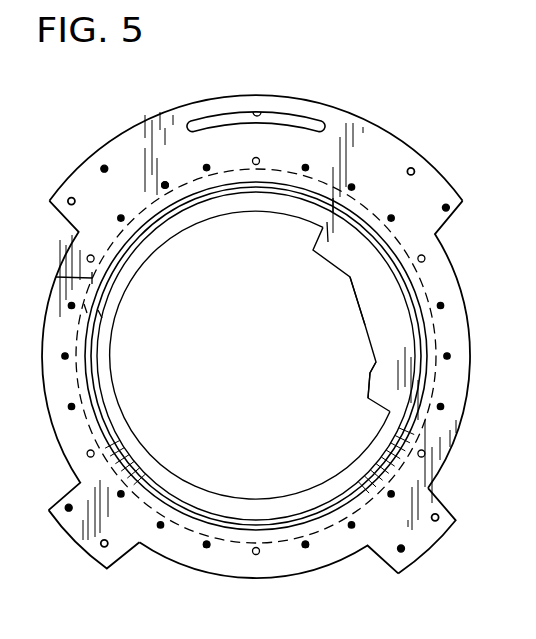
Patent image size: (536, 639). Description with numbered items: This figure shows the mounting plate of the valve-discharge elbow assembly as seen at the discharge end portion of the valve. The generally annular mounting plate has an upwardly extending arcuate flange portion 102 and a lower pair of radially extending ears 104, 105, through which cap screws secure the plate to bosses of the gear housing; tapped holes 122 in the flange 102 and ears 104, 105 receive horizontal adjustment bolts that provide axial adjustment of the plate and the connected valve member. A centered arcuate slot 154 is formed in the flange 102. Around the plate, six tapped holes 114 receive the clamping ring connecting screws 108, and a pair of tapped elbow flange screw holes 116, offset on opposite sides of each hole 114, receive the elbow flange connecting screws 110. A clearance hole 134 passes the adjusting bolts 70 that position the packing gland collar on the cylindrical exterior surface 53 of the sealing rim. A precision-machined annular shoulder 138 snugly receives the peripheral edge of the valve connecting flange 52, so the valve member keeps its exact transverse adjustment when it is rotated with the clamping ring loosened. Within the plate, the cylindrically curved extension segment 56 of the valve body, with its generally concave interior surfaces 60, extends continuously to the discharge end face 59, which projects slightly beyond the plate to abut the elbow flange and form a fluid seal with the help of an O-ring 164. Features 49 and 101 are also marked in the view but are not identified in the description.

The inner ring line 49 is at (110, 331).
The valve connecting flange 52 is at (437, 373).
The cylindrical exterior surface 53 is at (464, 308).
The extension segment 56 is at (342, 291).
The discharge end face 59 is at (254, 196).
The interior surfaces 60 is at (371, 372).
The adjusting bolts 70 is at (163, 185).
The lobe bolt hole 101 is at (70, 198).
The arcuate flange portion 102 is at (388, 132).
The ear 104 is at (440, 547).
The ear 105 is at (74, 548).
The clamping ring connecting screws 108 is at (255, 157).
The elbow flange connecting screws 110 is at (206, 164).
The tapped holes 114 is at (261, 158).
The tapped elbow flange screw holes 116 is at (165, 181).
The tapped holes 122 is at (102, 167).
The clearance hole 134 is at (165, 182).
The annular shoulder 138 is at (56, 277).
The arcuate slot 154 is at (257, 110).
The O-ring 164 is at (164, 222).